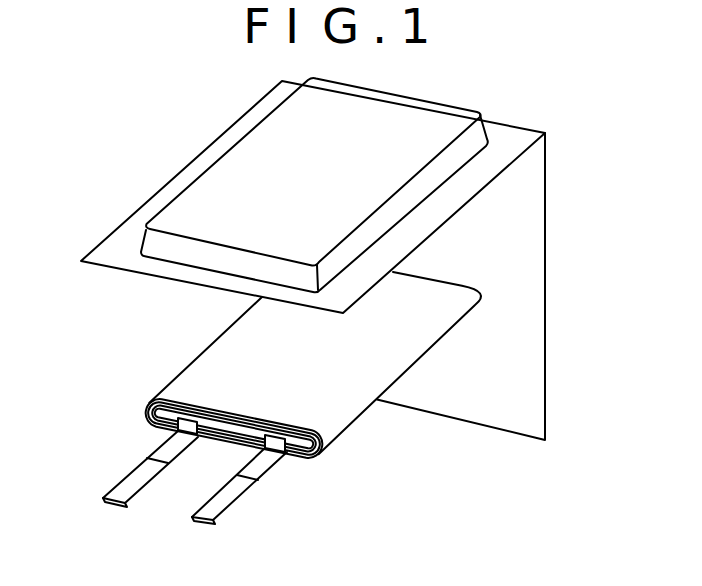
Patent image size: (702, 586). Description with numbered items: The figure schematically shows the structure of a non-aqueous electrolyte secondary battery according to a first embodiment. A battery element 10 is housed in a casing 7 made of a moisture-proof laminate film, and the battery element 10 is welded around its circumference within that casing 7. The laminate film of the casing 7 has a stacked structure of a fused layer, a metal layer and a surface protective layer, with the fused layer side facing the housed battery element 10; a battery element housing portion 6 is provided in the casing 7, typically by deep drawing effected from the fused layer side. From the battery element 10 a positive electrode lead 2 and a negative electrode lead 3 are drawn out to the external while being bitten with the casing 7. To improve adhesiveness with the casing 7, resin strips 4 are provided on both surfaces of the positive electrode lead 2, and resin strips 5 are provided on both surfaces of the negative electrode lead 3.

The positive electrode lead 2 is at (227, 508).
The negative electrode lead 3 is at (118, 482).
The resin strips 4 is at (270, 470).
The resin strips 5 is at (160, 444).
The battery element housing portion 6 is at (278, 136).
The casing 7 is at (167, 183).
The battery element 10 is at (180, 363).